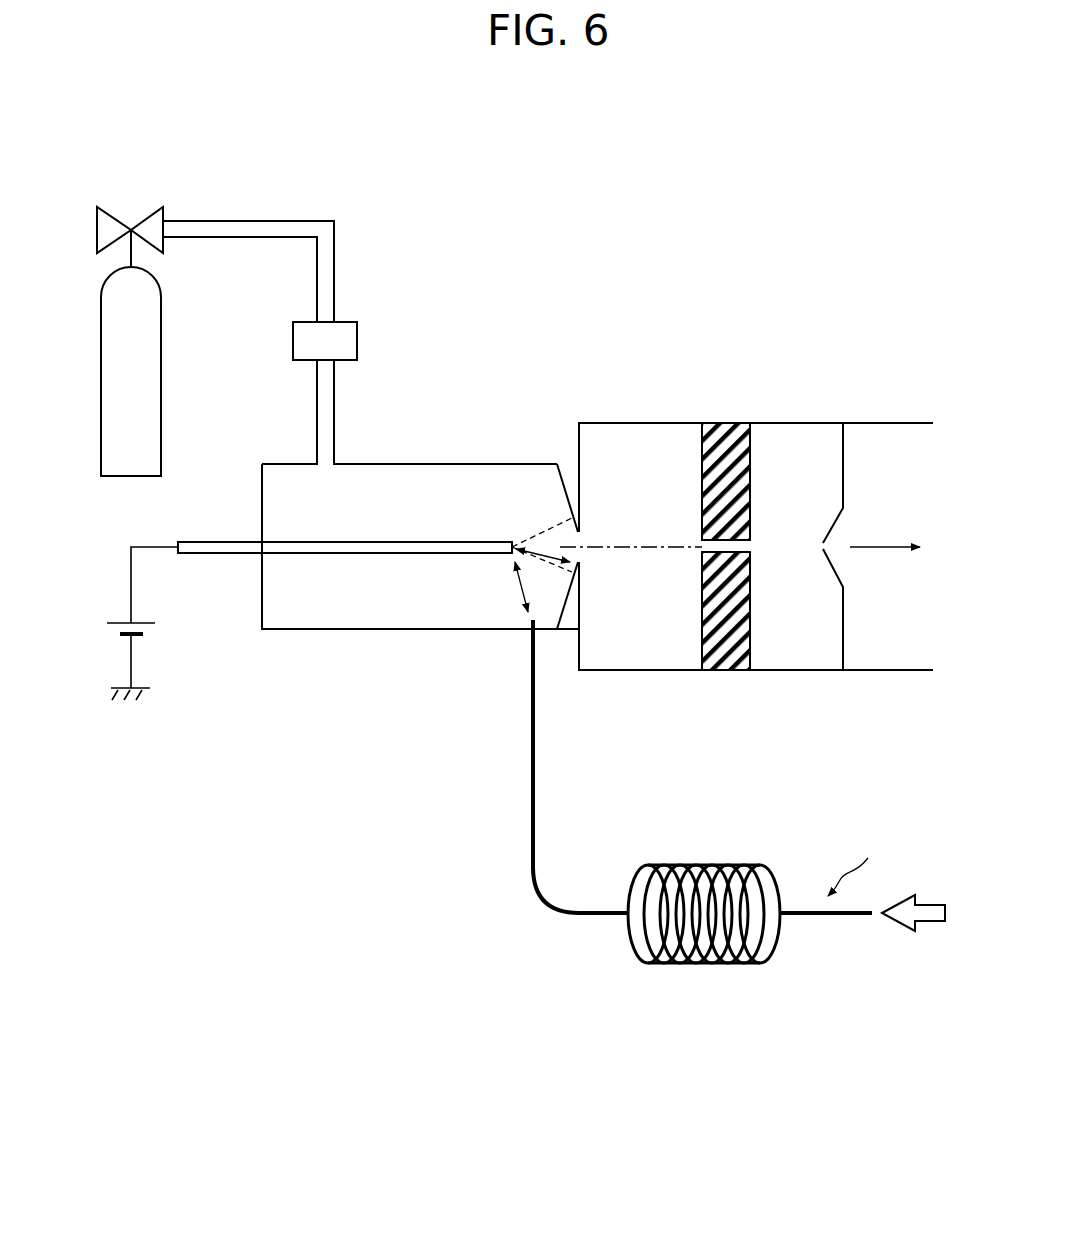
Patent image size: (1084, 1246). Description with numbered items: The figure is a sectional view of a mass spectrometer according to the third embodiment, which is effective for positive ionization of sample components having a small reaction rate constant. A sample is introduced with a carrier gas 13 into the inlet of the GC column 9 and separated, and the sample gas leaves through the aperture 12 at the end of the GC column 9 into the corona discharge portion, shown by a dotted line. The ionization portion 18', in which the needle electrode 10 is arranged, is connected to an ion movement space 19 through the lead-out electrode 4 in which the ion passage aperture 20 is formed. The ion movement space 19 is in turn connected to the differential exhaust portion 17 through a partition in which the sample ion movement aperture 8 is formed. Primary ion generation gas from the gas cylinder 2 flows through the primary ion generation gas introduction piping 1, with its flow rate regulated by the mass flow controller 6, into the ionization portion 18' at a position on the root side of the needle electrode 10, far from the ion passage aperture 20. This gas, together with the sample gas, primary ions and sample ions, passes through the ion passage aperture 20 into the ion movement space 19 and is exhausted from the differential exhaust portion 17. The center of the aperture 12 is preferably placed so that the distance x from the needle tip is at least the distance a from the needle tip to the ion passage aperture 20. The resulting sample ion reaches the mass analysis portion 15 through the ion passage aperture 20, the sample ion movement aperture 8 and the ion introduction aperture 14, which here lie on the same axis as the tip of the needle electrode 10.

The primary ion generation gas introduction piping 1 is at (326, 380).
The gas cylinder 2 is at (116, 350).
The lead-out electrode 4 is at (578, 470).
The mass flow controller 6 is at (350, 342).
The sample ion movement aperture 8 is at (725, 485).
The GC column 9 is at (701, 968).
The needle electrode 10 is at (320, 555).
The aperture 12 is at (527, 595).
The carrier gas 13 is at (926, 925).
The ion introduction aperture 14 is at (825, 548).
The mass analysis portion 15 is at (905, 455).
The differential exhaust portion 17 is at (808, 455).
The ionization portion 18' is at (420, 511).
The ion movement space 19 is at (628, 590).
The ion passage aperture 20 is at (582, 541).